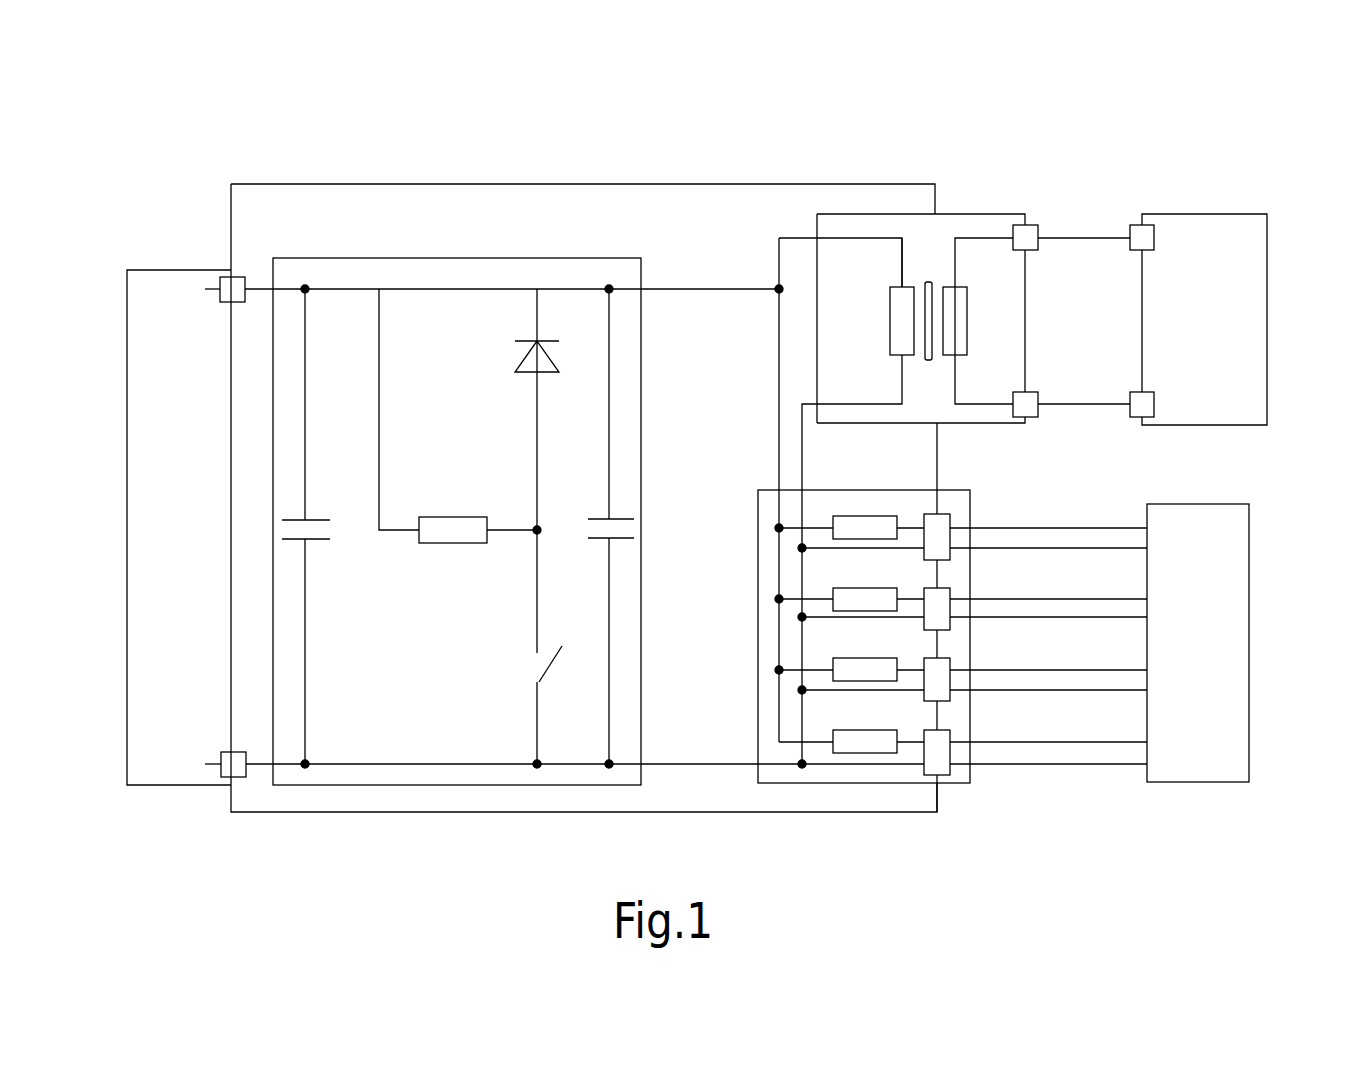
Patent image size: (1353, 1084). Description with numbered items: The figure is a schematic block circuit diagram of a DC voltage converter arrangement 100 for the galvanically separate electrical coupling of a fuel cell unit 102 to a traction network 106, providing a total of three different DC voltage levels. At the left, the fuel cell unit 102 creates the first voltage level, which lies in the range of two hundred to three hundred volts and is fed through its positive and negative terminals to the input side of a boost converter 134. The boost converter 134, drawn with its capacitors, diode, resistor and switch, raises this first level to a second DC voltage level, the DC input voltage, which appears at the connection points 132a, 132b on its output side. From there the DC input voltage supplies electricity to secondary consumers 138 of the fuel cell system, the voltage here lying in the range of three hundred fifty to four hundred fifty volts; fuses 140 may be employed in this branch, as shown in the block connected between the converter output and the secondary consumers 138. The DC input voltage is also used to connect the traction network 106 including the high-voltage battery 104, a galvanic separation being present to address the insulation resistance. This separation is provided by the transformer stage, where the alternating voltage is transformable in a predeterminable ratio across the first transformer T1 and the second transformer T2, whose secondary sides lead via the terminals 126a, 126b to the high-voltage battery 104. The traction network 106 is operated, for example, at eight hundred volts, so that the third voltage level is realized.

The DC voltage converter arrangement 100 is at (665, 138).
The fuel cell unit 102 is at (155, 380).
The high-voltage battery 104 is at (1255, 258).
The traction network 106 is at (1208, 185).
The first terminal 126a is at (1030, 232).
The second terminal 126b is at (1030, 407).
The first connection node 132a is at (613, 285).
The second connection node 132b is at (612, 768).
The boost converter 134 is at (485, 258).
The secondary consumers 138 is at (1232, 560).
The fuses 140 is at (868, 747).
The first transformer T1 is at (922, 265).
The second transformer T2 is at (931, 373).